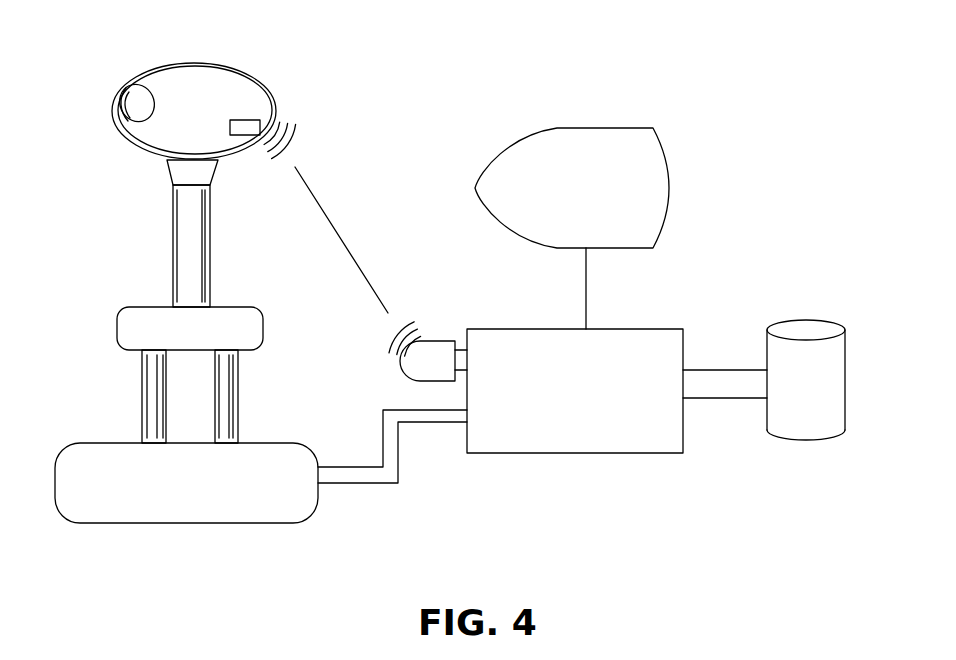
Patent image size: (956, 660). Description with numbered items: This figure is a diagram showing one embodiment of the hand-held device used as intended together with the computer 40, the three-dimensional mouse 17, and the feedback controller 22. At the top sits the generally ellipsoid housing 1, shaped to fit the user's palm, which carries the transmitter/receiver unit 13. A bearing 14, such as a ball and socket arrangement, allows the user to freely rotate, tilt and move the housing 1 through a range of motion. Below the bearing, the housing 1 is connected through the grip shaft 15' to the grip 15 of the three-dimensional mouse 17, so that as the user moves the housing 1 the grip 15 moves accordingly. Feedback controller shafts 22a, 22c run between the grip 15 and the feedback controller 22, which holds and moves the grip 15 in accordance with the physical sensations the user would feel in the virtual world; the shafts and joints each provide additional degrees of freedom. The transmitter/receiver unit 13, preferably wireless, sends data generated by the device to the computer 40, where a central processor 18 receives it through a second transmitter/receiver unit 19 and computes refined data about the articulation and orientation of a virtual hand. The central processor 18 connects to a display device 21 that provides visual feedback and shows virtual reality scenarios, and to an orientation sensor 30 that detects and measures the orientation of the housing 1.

The housing 1 is at (208, 80).
The transmitter/receiver unit 13 is at (247, 120).
The bearing 14 is at (204, 172).
The grip shaft 15' is at (159, 246).
The grip 15 is at (202, 306).
The feedback controller shaft 22a is at (152, 392).
The feedback controller shaft 22c is at (225, 393).
The 3-D mouse 17 is at (172, 469).
The feedback controller 22 is at (247, 505).
The central processor 18 is at (636, 453).
The second transmitter/receiver unit 19 is at (437, 353).
The display device 21 is at (637, 182).
The computer 40 is at (666, 331).
The orientation sensor 30 is at (780, 427).